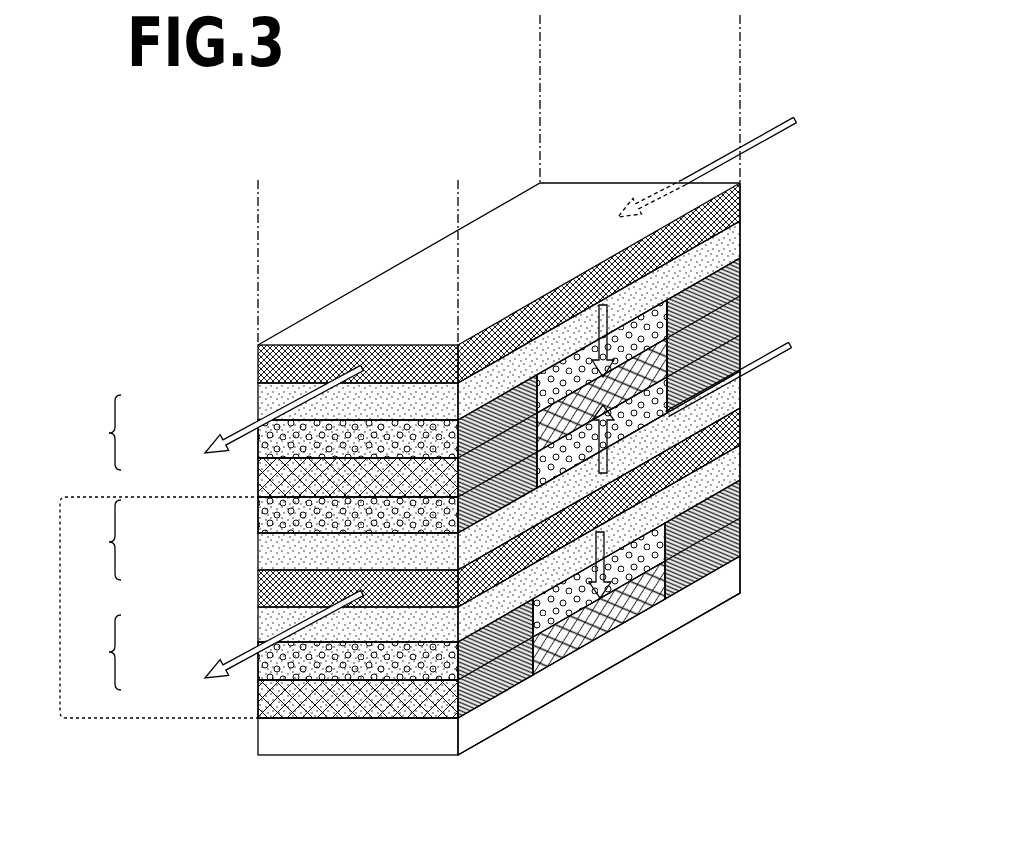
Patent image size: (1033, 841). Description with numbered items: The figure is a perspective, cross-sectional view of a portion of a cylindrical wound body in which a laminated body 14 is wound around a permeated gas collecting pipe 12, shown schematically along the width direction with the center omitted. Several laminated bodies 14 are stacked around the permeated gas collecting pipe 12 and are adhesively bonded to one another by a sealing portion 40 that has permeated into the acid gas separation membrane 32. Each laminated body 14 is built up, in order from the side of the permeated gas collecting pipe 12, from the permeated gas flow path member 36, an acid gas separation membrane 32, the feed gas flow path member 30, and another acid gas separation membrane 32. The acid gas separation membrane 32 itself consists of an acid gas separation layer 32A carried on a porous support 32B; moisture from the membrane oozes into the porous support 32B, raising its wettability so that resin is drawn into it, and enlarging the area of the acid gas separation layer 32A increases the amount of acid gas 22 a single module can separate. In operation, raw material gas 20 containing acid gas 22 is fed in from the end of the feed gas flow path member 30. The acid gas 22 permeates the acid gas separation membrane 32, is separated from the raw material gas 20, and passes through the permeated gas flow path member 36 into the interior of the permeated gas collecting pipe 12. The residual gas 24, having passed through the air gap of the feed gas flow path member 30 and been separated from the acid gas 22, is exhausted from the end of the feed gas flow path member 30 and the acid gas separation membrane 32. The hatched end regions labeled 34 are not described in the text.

The permeated gas collecting pipe 12 is at (258, 735).
The laminated body 14 is at (60, 607).
The raw material gas 20 is at (757, 128).
The acid gas 22 is at (606, 312).
The residual gas 24 is at (280, 402).
The feed gas flow path member 30 is at (258, 358).
The acid gas separation membrane 32 is at (99, 542).
The acid gas separation layer 32A is at (258, 402).
The porous support 32B is at (258, 448).
The seal member 34 is at (495, 460).
The permeated gas flow path member 36 is at (258, 480).
The sealing portion 40 is at (519, 477).